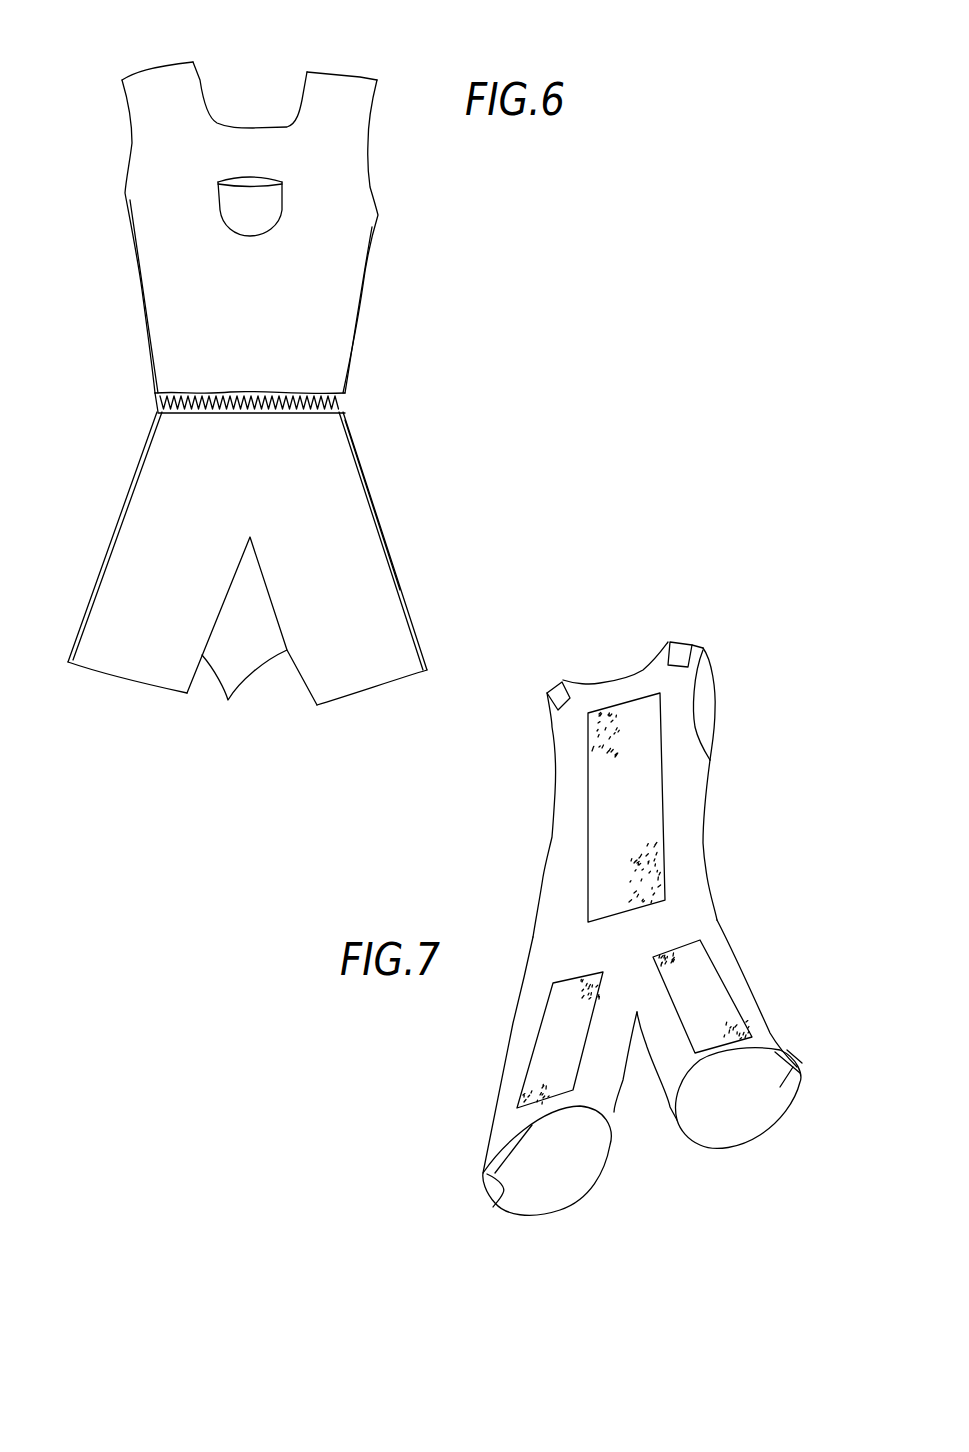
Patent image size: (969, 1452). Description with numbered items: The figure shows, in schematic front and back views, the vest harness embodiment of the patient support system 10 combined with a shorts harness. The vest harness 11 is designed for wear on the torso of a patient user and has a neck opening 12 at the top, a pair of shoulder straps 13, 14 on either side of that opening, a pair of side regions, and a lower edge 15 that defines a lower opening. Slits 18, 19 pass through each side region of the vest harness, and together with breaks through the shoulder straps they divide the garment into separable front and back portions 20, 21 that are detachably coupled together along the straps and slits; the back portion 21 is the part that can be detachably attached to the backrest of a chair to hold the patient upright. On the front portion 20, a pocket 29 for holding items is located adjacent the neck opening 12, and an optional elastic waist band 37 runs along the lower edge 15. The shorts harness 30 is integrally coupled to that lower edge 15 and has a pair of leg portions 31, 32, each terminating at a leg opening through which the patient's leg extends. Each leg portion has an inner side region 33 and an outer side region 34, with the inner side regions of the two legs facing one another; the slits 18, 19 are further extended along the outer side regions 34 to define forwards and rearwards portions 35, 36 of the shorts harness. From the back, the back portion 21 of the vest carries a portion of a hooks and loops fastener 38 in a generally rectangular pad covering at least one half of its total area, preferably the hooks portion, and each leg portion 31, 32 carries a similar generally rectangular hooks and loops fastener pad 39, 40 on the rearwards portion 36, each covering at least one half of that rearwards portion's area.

In FIG. 6, the patient support system 10 is at (106, 88).
In FIG. 6, the vest harness 11 is at (360, 56).
In FIG. 7, the vest harness 11 is at (740, 632).
In FIG. 6, the neck opening 12 is at (222, 112).
In FIG. 7, the neck opening 12 is at (602, 668).
In FIG. 6, the shoulder strap 13 is at (166, 70).
In FIG. 7, the shoulder strap 13 is at (558, 680).
In FIG. 6, the shoulder strap 14 is at (363, 70).
In FIG. 7, the shoulder strap 14 is at (677, 642).
In FIG. 6, the lower edge 15 is at (155, 398).
In FIG. 7, the slit 18 is at (493, 1207).
In FIG. 7, the slit 19 is at (782, 1120).
In FIG. 6, the front portion 20 is at (340, 283).
In FIG. 7, the back portion 21 is at (560, 853).
In FIG. 6, the pocket 29 is at (230, 218).
In FIG. 6, the shorts harness 30 is at (376, 442).
In FIG. 7, the shorts harness 30 is at (744, 930).
In FIG. 6, the leg portion 31 is at (100, 627).
In FIG. 7, the leg portion 31 is at (500, 1108).
In FIG. 6, the leg portion 32 is at (370, 623).
In FIG. 7, the leg portion 32 is at (767, 1038).
In FIG. 6, the inner side region 33 is at (252, 635).
In FIG. 7, the inner side region 33 is at (613, 1107).
In FIG. 6, the outer side region 34 is at (423, 653).
In FIG. 6, the forwards portion 35 is at (348, 522).
In FIG. 7, the rearwards portion 36 is at (707, 935).
In FIG. 6, the elastic waist band 37 is at (342, 403).
In FIG. 7, the hooks and loops fastener 38 is at (632, 817).
In FIG. 7, the hooks and loops fastener 39 is at (545, 1038).
In FIG. 7, the hooks and loops fastener 40 is at (715, 1005).